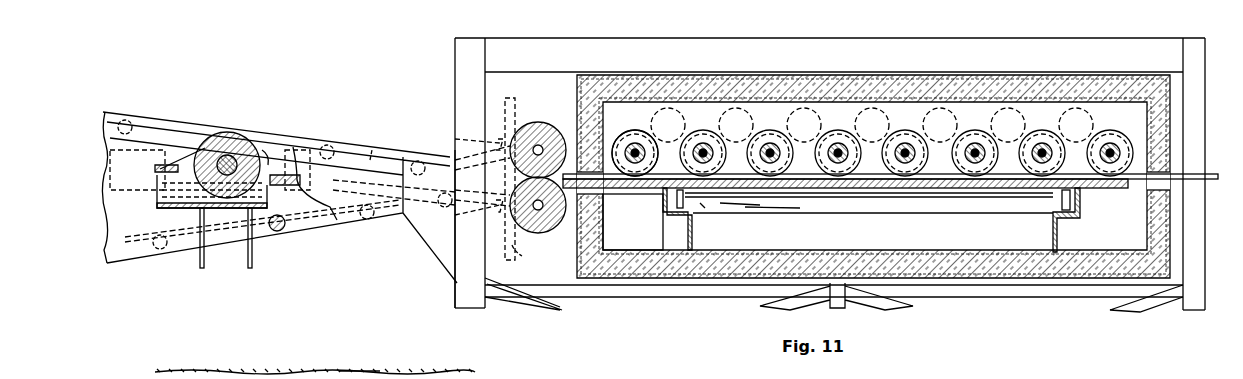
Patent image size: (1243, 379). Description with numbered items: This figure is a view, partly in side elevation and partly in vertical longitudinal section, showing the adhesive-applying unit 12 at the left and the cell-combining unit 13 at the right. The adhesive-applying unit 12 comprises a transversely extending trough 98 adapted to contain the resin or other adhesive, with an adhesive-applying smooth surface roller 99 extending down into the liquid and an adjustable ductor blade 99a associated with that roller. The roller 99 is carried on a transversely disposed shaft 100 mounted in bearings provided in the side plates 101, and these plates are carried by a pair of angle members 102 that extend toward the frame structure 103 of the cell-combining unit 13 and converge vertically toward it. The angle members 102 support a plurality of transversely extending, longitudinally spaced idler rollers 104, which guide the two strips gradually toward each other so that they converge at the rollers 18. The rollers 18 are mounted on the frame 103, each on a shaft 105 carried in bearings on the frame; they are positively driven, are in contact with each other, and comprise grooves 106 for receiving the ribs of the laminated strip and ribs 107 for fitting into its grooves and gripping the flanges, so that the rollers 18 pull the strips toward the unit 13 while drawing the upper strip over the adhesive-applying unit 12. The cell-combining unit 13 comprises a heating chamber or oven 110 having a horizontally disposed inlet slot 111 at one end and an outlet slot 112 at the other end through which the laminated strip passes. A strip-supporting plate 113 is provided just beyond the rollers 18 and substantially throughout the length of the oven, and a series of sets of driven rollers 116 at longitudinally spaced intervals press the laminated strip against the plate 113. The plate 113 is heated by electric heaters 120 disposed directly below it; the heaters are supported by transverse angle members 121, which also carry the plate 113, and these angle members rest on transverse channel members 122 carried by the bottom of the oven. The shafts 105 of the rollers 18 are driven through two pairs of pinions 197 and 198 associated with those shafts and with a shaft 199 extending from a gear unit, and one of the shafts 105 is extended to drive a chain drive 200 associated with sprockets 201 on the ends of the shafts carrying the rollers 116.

The adhesive-applying unit 12 is at (191, 112).
The cell-combining unit 13 is at (806, 24).
The rollers 18 is at (548, 130).
The trough 98 is at (168, 210).
The adhesive-applying smooth surface roller 99 is at (265, 142).
The ductor blade 99a is at (161, 158).
The shaft 100 is at (222, 150).
The side plates 101 is at (297, 147).
The angle members 102 is at (372, 160).
The frame structure 103 is at (463, 280).
The idler rollers 104 is at (278, 231).
The shaft 105 is at (508, 104).
The grooves 106 is at (414, 376).
The ribs 107 is at (362, 376).
The heating chamber or oven 110 is at (614, 75).
The inlet slot 111 is at (612, 188).
The outlet slot 112 is at (1185, 178).
The strip-supporting plate 113 is at (1107, 188).
The driven rollers 116 is at (703, 135).
The electric heaters 120 is at (927, 197).
The transverse angle members 121 is at (1080, 205).
The transverse channel members 122 is at (692, 237).
The pinions 197 is at (466, 215).
The pinions 198 is at (466, 140).
The shaft 199 is at (522, 256).
The chain drive 200 is at (632, 129).
The sprockets 201 is at (763, 140).